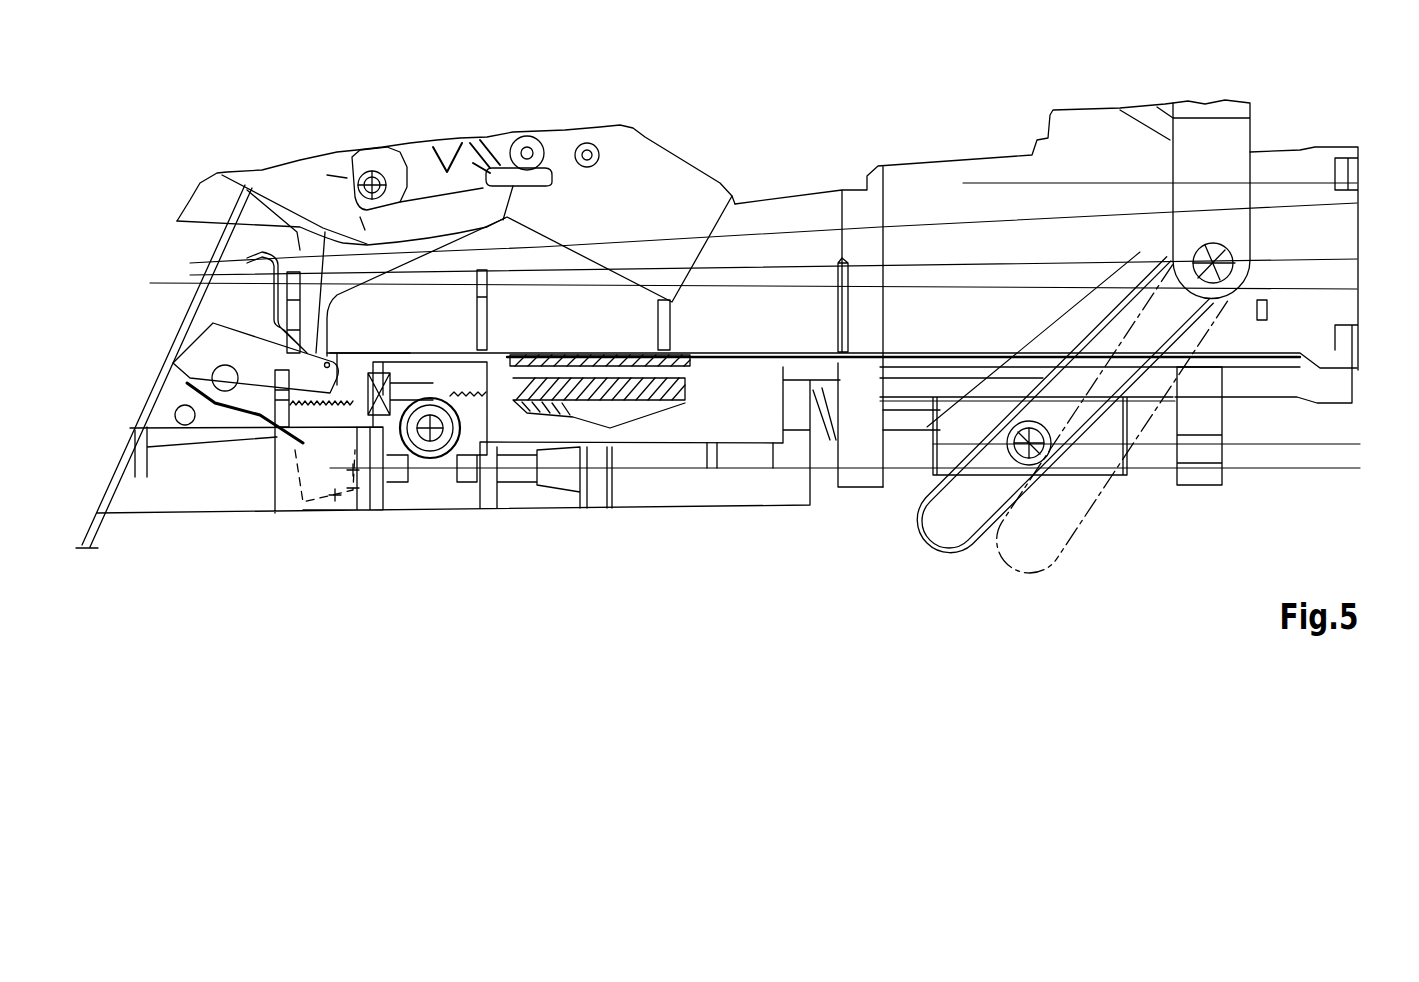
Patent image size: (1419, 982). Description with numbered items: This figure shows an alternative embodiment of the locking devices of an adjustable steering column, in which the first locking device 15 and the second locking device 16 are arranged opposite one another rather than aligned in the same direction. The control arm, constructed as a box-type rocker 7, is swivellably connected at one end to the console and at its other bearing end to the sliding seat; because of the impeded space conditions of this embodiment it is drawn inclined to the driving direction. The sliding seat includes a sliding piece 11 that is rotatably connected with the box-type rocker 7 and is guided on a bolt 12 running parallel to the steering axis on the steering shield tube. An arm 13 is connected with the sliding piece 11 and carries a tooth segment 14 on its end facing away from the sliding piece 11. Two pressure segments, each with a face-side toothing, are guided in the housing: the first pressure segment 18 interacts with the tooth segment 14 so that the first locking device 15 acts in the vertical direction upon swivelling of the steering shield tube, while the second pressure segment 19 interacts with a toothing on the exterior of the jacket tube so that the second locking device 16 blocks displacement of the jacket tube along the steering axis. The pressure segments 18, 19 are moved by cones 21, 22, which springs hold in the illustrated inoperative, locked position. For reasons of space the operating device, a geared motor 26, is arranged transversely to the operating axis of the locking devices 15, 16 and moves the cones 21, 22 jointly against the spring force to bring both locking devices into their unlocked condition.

The control arm 7 is at (953, 525).
The sliding piece 11 is at (1113, 467).
The bolt 12 is at (1160, 452).
The arm 13 is at (803, 387).
The tooth segment 14 is at (596, 405).
The first locking device 15 is at (535, 547).
The second locking device 16 is at (323, 563).
The first pressure segment 18 is at (558, 385).
The second pressure segment 19 is at (333, 370).
The cone 21 is at (570, 483).
The second cone 22 is at (340, 507).
The geared motor 26 is at (440, 458).